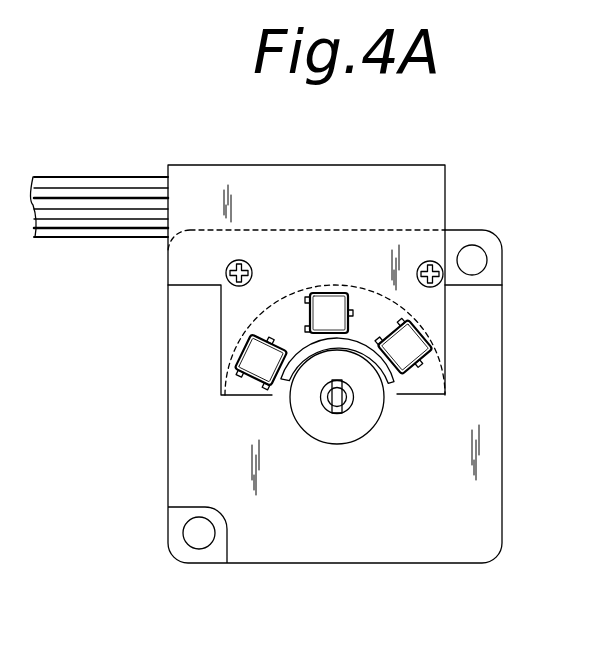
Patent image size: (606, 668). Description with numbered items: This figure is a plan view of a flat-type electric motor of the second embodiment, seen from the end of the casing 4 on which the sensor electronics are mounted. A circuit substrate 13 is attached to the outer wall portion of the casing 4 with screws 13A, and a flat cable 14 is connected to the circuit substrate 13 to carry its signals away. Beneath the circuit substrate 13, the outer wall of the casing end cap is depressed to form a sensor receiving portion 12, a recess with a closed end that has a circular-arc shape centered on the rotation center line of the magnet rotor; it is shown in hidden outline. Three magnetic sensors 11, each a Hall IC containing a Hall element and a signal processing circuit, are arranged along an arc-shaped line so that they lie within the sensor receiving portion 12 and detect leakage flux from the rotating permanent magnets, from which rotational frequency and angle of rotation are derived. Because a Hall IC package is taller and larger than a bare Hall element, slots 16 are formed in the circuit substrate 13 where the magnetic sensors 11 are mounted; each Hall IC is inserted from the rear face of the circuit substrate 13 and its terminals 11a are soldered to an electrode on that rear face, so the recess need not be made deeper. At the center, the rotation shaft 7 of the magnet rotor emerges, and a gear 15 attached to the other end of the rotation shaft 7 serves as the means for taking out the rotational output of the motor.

The casing 4 is at (495, 295).
The rotation shaft 7 is at (337, 397).
The magnetic sensor 11 is at (262, 362).
The terminals 11a is at (268, 384).
The sensor receiving portion 12 is at (285, 312).
The circuit substrate 13 is at (412, 172).
The screws 13A is at (445, 283).
The flat cable 14 is at (74, 185).
The gear 15 is at (357, 438).
The slots 16 is at (281, 382).